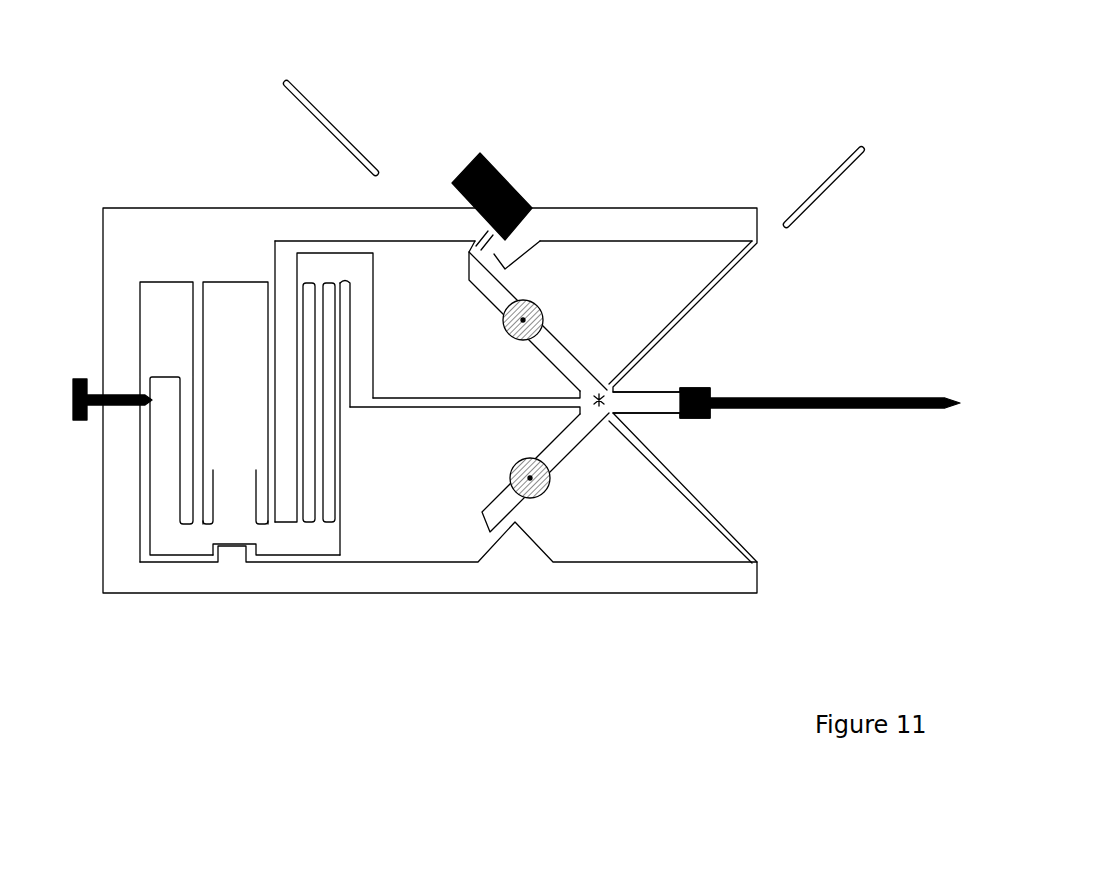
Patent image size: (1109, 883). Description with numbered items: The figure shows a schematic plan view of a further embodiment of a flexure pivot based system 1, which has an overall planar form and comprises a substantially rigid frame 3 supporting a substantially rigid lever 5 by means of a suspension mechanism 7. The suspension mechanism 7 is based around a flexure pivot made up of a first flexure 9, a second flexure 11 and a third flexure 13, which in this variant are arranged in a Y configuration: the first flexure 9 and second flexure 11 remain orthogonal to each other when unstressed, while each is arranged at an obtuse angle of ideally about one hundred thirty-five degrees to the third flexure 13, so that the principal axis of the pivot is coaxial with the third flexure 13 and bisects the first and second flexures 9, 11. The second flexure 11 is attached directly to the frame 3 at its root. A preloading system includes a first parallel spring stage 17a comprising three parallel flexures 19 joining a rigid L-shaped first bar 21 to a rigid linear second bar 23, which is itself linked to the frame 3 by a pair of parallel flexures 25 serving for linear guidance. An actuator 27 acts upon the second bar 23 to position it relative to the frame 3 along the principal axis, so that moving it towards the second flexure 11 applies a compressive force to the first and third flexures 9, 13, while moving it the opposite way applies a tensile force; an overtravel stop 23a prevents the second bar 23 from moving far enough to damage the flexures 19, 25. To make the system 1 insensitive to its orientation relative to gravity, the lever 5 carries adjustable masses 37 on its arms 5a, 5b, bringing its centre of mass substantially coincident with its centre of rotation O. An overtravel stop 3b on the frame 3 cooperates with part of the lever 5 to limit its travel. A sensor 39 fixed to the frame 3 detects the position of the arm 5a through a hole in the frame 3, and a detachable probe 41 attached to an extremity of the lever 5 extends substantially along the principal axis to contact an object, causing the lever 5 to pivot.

The system 1 is at (816, 105).
The frame 3 is at (665, 580).
The overtravel stop 3b is at (523, 548).
The lever 5 is at (650, 405).
The arm of the lever 5a is at (480, 284).
The arm of the lever 5b is at (486, 518).
The suspension mechanism 7 is at (718, 350).
The first flexure 9 is at (720, 520).
The second flexure 11 is at (700, 303).
The third flexure 13 is at (457, 398).
The first parallel spring stage 17a is at (311, 545).
The parallel flexures 19 is at (303, 413).
The first bar 21 is at (328, 263).
The second bar 23 is at (177, 543).
The overtravel stop 23a is at (238, 546).
The parallel flexures 25 is at (268, 300).
The actuator 27 is at (83, 380).
The masses 37 is at (532, 305).
The sensor 39 is at (518, 185).
The probe 41 is at (893, 400).
The centre of rotation O is at (603, 405).